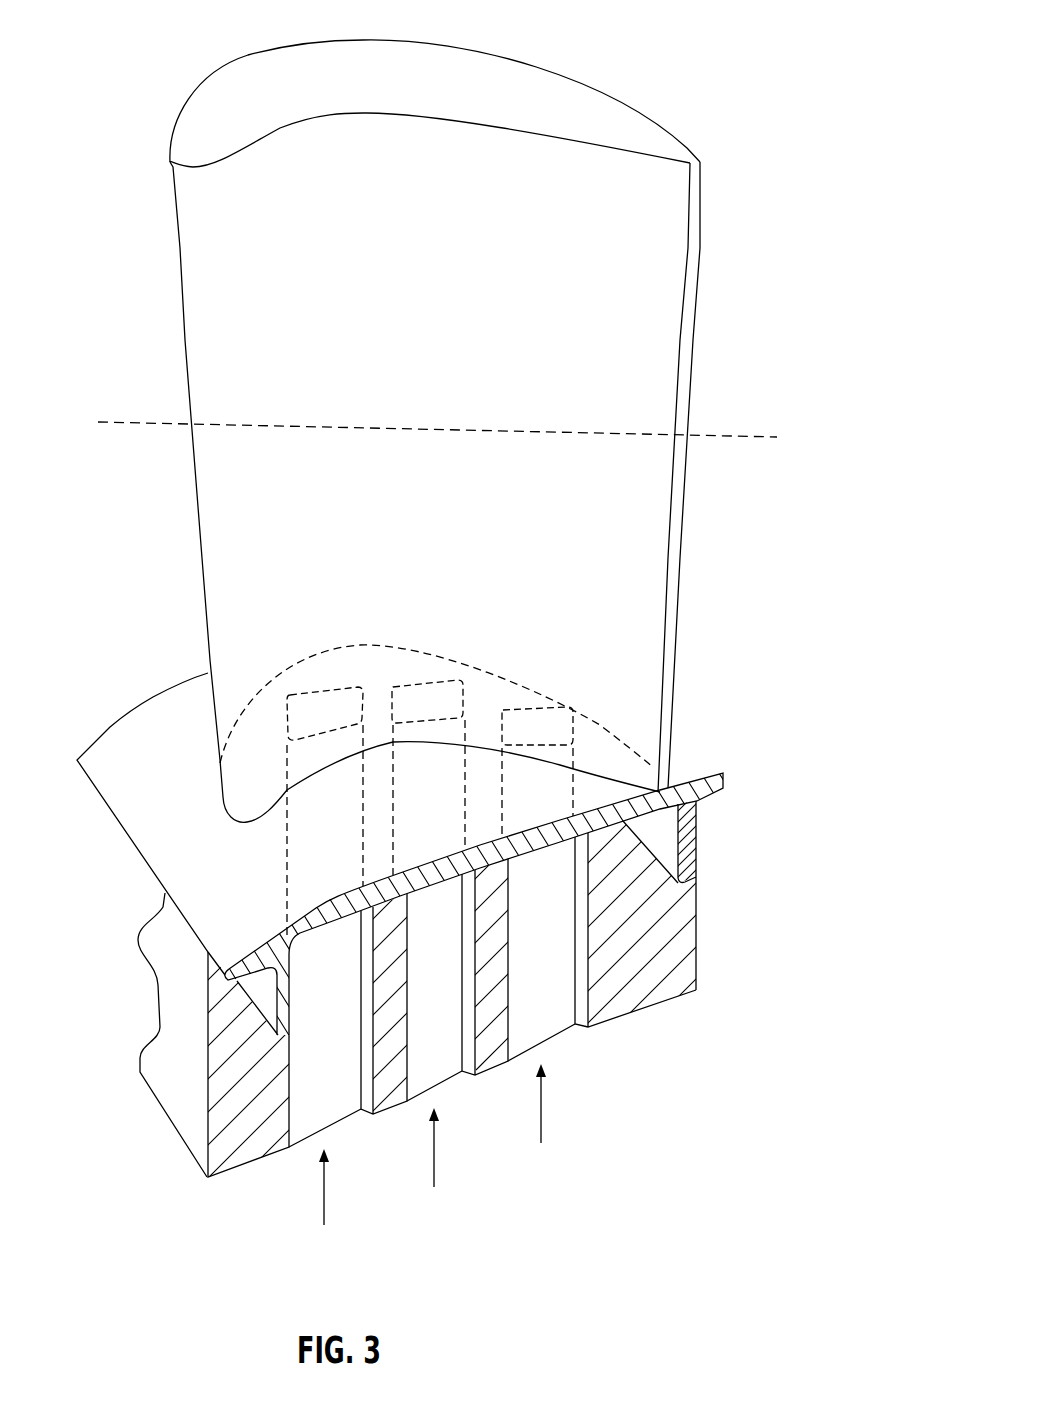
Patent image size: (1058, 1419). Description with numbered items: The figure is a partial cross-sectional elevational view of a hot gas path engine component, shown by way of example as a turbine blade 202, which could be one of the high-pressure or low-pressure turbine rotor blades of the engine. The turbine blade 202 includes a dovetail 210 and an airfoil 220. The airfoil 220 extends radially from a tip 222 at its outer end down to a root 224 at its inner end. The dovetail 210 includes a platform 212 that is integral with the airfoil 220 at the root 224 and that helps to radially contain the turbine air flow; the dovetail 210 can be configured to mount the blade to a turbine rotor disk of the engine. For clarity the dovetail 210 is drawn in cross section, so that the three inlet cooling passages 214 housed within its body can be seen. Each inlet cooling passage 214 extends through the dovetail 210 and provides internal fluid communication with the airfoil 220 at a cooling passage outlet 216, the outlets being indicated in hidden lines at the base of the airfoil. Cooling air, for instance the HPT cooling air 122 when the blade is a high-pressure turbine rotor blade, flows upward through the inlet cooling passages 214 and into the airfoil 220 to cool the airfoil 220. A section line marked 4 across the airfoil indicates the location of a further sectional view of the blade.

The turbine blade 202 is at (422, 399).
The airfoil 220 is at (194, 501).
The tip 222 is at (267, 78).
The root 224 is at (613, 750).
The platform 212 is at (132, 732).
The dovetail 210 is at (178, 987).
The cooling passage outlet 216 is at (317, 687).
The inlet cooling passage 214 is at (316, 1080).
The HPT cooling air 122 is at (541, 1109).
The section line 4- 4 is at (98, 422).